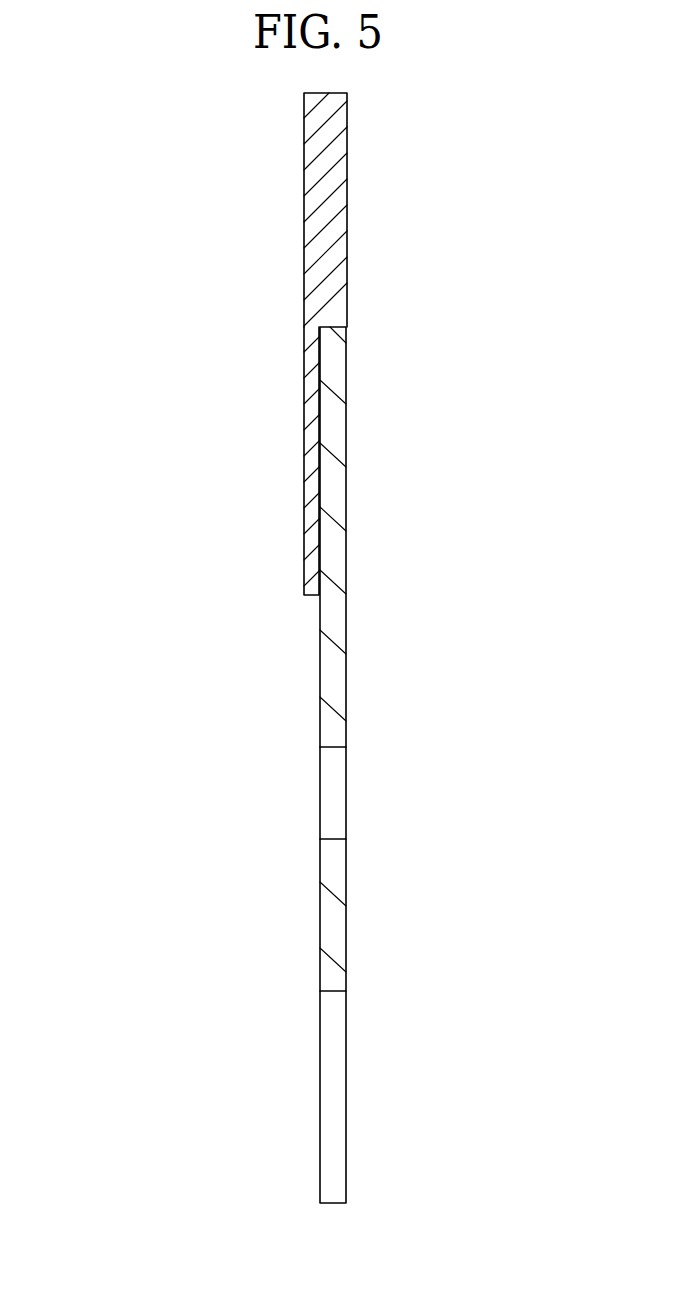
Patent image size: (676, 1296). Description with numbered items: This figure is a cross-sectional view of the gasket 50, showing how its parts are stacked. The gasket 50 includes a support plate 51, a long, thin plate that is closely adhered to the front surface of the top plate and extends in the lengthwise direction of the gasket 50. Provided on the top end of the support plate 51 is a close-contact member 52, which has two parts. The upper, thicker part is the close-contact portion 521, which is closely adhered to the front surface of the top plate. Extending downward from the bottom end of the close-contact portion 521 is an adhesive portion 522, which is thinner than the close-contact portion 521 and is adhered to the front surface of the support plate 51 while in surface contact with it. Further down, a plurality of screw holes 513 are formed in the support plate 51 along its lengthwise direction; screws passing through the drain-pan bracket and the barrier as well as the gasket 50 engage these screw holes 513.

The gasket 50 is at (420, 243).
The support plate 51 is at (347, 508).
The screw hole 513 is at (331, 803).
The close-contact member 52 is at (185, 285).
The close-contact portion 521 is at (318, 267).
The adhesive portion 522 is at (303, 417).